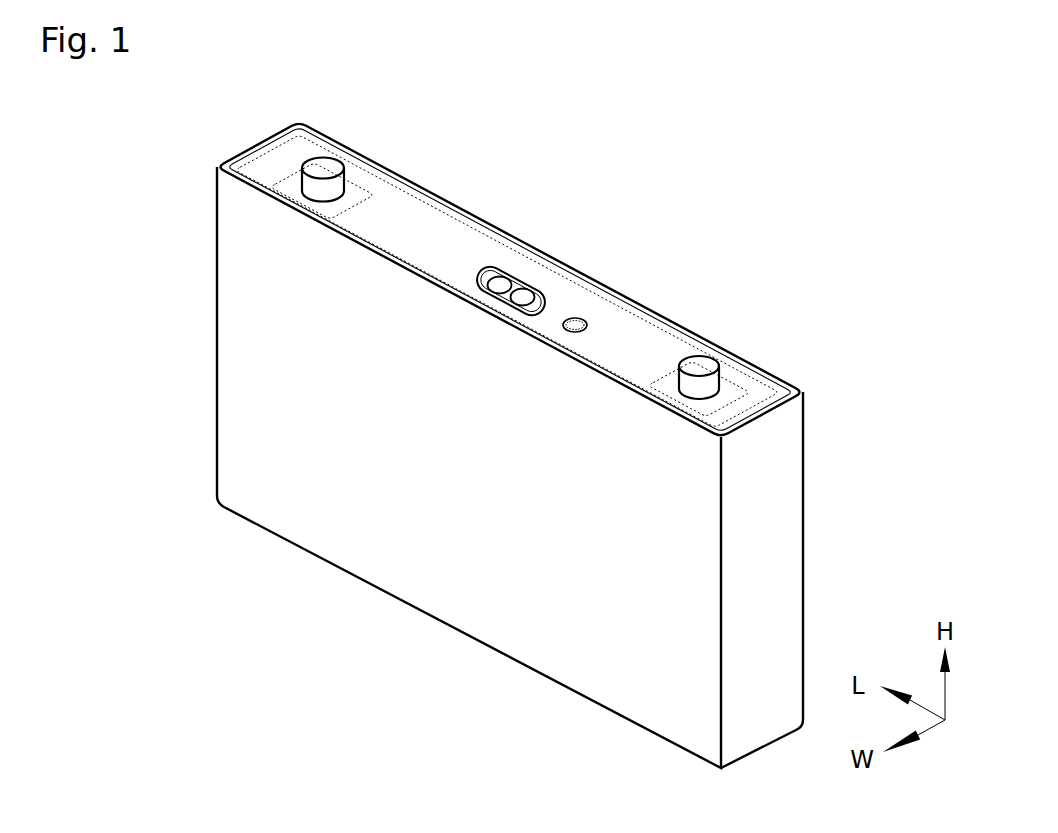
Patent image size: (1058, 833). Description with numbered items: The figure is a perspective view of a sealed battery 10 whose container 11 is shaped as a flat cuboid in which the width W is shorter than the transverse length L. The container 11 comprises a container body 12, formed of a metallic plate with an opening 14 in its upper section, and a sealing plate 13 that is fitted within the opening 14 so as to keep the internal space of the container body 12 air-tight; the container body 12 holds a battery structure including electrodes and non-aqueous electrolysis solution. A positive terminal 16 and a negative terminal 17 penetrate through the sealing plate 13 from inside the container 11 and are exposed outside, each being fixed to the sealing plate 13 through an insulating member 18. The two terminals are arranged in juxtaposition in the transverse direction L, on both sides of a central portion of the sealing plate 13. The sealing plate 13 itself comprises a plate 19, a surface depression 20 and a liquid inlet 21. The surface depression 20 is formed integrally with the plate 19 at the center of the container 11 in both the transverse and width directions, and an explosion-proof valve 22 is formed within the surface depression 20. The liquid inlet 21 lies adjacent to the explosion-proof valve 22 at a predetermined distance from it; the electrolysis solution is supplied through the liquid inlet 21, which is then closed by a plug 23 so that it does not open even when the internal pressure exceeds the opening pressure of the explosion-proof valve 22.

The sealed battery 10 is at (456, 436).
The container 11 is at (455, 436).
The container body 12 is at (240, 225).
The sealing plate 13 is at (237, 155).
The opening 14 is at (468, 200).
The positive terminal 16 is at (326, 170).
The negative terminal 17 is at (700, 368).
The insulating member 18 is at (353, 194).
The plate 19 is at (410, 212).
The surface depression 20 is at (524, 265).
The liquid inlet 21 is at (616, 307).
The explosion-proof valve 22 is at (550, 263).
The plug 23 is at (590, 330).